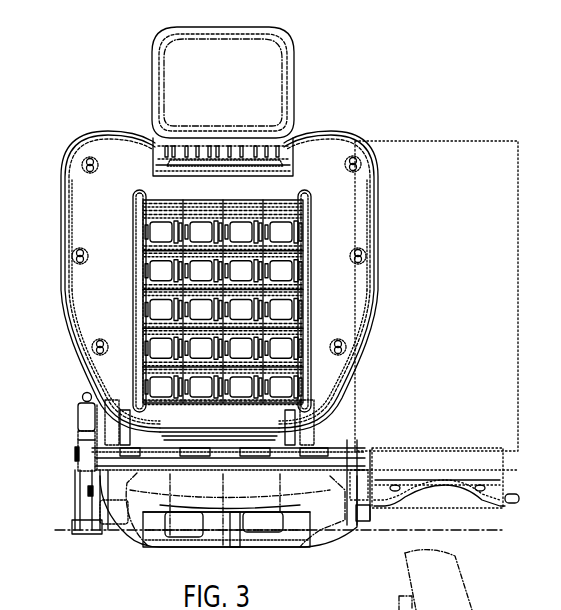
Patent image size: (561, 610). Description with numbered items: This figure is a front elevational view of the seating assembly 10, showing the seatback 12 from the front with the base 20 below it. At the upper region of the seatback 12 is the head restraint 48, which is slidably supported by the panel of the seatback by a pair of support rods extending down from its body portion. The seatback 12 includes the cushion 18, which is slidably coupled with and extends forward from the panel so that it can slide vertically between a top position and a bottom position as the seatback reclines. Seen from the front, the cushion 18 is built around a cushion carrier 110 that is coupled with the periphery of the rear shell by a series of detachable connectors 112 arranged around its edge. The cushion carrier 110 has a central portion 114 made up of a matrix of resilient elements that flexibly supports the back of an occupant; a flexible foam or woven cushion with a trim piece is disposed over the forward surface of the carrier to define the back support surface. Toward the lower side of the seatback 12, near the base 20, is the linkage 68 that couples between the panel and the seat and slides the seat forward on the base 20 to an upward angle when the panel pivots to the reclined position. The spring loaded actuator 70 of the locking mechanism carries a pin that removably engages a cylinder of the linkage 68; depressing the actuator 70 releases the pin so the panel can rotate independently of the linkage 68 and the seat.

The seating assembly 10 is at (424, 86).
The seatback 12 is at (65, 145).
The cushion 18 is at (93, 204).
The base 20 is at (65, 530).
The head restraint 48 is at (262, 86).
The linkage 68 is at (70, 470).
The spring loaded actuator 70 is at (80, 407).
The cushion carrier 110 is at (350, 191).
The detachable connectors 112 is at (78, 258).
The central portion 114 is at (282, 233).